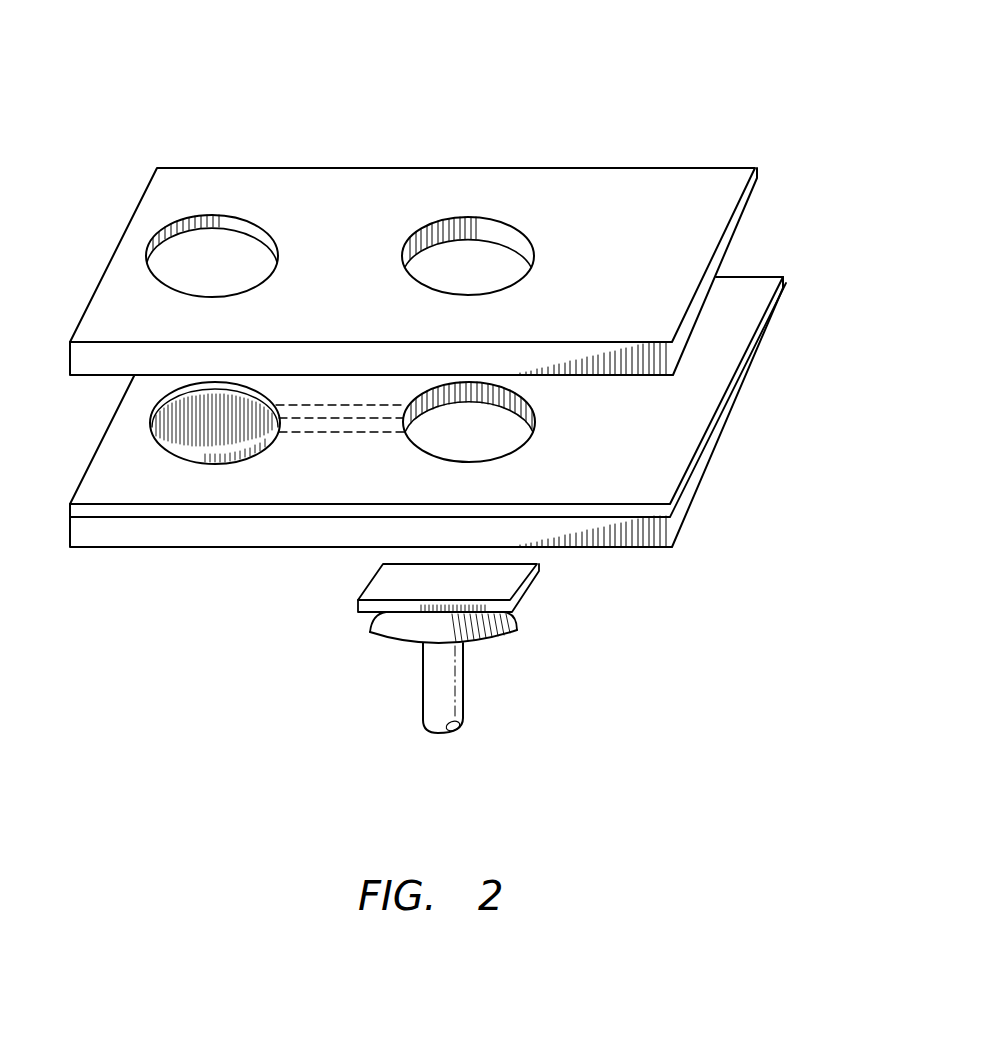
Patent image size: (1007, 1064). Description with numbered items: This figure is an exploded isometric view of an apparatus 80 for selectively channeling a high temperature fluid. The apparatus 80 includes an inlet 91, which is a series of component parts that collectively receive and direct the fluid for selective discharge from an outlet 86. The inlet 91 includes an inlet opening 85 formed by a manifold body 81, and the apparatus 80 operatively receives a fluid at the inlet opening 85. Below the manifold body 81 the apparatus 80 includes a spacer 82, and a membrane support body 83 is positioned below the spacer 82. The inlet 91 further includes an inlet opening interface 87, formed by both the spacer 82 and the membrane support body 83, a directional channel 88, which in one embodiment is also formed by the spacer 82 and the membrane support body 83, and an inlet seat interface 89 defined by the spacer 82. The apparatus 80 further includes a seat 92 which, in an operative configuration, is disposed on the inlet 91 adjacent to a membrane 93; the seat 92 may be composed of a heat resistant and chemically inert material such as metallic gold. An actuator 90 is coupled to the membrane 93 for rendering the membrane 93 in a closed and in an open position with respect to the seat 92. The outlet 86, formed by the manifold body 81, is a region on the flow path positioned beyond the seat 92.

The apparatus 80 is at (778, 45).
The manifold body 81 is at (653, 182).
The spacer 82 is at (650, 487).
The membrane support body 83 is at (630, 538).
The inlet opening 85 is at (268, 227).
The outlet 86 is at (455, 214).
The inlet opening interface 87 is at (240, 455).
The directional channel 88 is at (348, 432).
The inlet seat interface 89 is at (500, 455).
The actuator 90 is at (505, 662).
The inlet 91 is at (203, 215).
The seat 92 is at (523, 247).
The membrane 93 is at (538, 582).